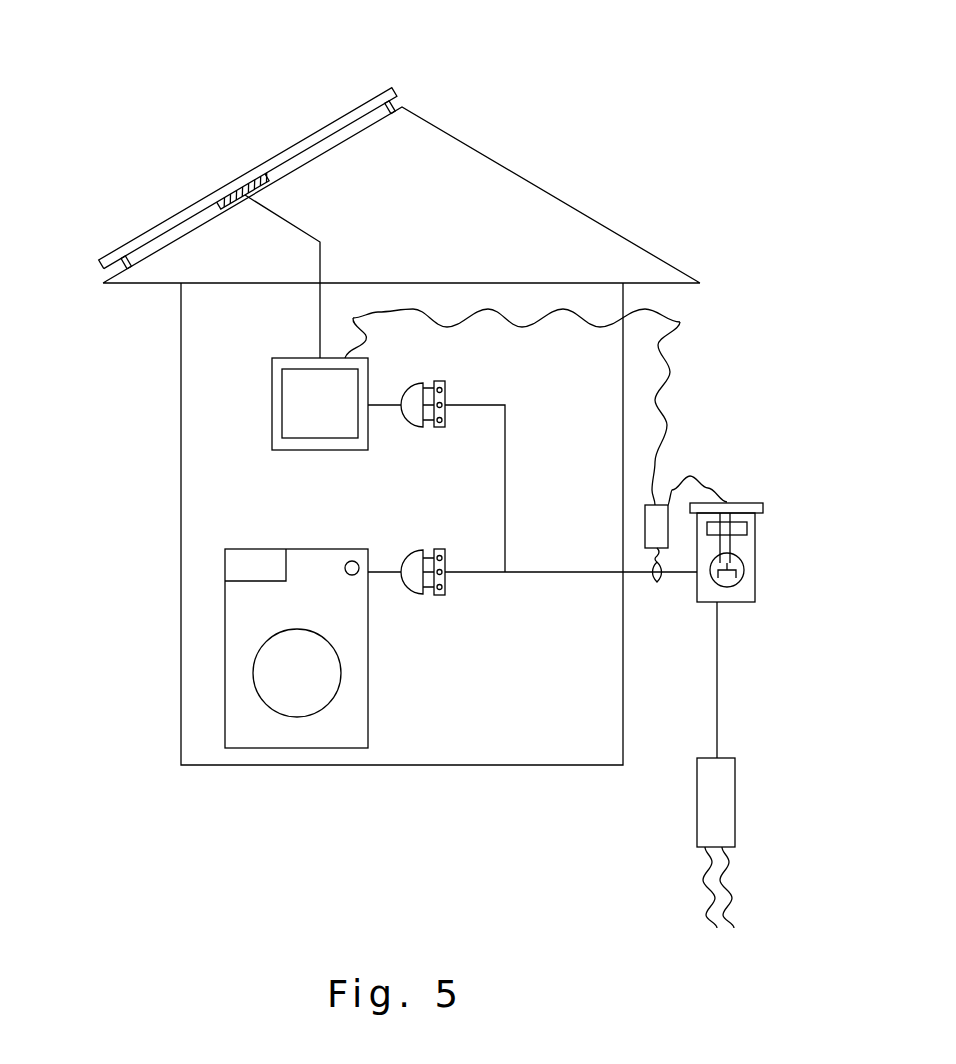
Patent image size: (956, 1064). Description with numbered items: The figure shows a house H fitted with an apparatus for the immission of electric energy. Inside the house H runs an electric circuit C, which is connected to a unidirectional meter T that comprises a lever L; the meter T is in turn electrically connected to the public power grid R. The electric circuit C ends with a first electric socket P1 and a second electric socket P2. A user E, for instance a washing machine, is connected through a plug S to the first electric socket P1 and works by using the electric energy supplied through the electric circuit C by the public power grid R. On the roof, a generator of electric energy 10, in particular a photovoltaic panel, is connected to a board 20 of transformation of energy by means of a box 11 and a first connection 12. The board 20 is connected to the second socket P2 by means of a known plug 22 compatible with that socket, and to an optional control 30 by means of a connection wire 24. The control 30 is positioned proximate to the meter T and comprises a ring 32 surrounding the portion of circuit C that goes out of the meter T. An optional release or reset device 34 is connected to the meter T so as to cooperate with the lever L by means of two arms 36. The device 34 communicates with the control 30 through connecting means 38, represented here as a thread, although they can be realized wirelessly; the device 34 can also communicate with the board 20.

The generator of electric energy 10 is at (343, 120).
The box 11 is at (215, 196).
The first connection 12 is at (322, 258).
The board of transformation of energy 20 is at (258, 405).
The plug 22 is at (417, 410).
The connection wire 24 is at (677, 313).
The control 30 is at (658, 515).
The ring 32 is at (657, 583).
The release or reset device 34 is at (745, 505).
The arms 36 is at (730, 548).
The connecting means 38 is at (700, 487).
The house H is at (590, 205).
The second electric socket P2 is at (447, 395).
The first electric socket P1 is at (448, 593).
The electric circuit C is at (505, 485).
The user E is at (253, 613).
The plug S is at (418, 593).
The unidirectional meter T is at (747, 560).
The lever L is at (738, 625).
The public power grid R is at (720, 805).